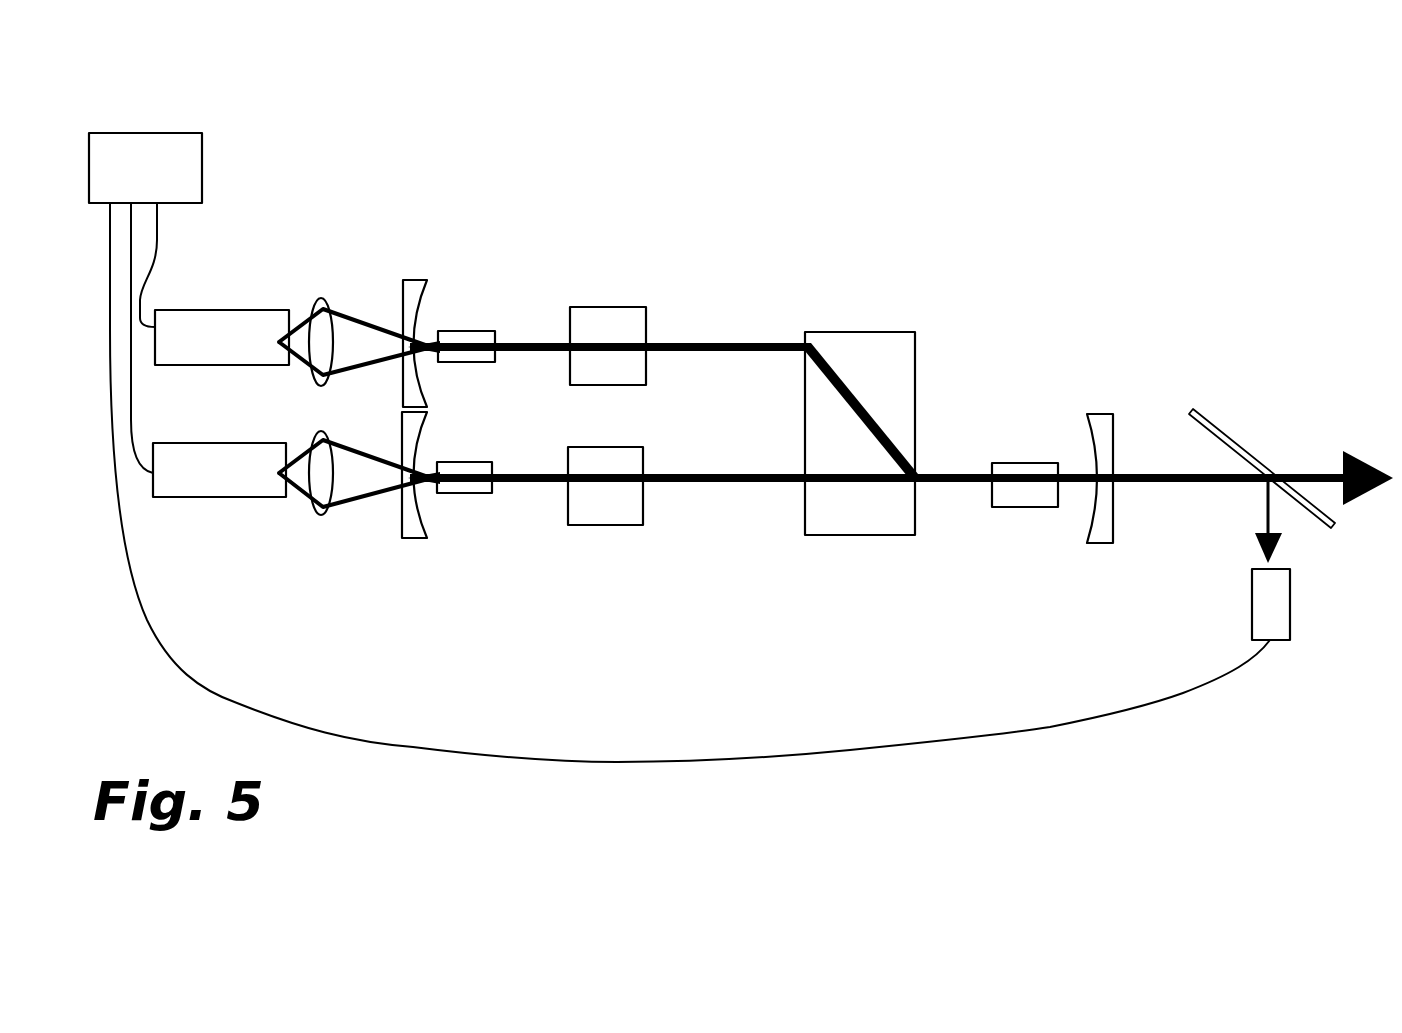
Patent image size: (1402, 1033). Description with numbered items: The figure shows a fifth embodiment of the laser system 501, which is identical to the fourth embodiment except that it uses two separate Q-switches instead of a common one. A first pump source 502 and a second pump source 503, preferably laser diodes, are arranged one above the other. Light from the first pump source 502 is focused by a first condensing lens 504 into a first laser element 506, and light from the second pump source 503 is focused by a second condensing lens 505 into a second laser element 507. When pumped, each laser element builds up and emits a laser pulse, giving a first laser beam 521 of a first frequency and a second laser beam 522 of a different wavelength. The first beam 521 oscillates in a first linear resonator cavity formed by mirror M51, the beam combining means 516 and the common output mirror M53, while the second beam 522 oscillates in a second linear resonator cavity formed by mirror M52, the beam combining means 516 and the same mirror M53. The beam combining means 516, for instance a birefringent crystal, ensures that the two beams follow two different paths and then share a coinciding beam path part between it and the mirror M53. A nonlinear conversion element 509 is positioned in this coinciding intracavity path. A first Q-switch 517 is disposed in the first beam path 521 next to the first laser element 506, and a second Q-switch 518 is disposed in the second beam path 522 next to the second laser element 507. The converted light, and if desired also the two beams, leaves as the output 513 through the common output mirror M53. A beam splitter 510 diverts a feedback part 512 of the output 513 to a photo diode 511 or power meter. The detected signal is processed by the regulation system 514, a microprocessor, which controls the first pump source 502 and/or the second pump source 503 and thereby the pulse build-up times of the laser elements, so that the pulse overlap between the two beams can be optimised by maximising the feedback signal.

The laser system 501 is at (870, 156).
The first pump source 502 is at (236, 324).
The second pump source 503 is at (213, 487).
The first condensing lens 504 is at (335, 308).
The second condensing lens 505 is at (320, 518).
The first laser element 506 is at (475, 332).
The second laser element 507 is at (480, 488).
The nonlinear conversion element 509 is at (1007, 500).
The beam splitter 510 is at (1195, 410).
The photo diode 511 is at (1278, 615).
The feedback part 512 is at (1273, 512).
The output 513 is at (1292, 470).
The regulation system 514 is at (173, 140).
The beam combining means 516 is at (862, 522).
The first Q-switch 517 is at (637, 365).
The second Q-switch 518 is at (637, 505).
The first laser beam 521 is at (680, 344).
The second laser beam 522 is at (680, 475).
The first mirror M51 is at (413, 285).
The second mirror M52 is at (410, 528).
The common output mirror M53 is at (1140, 568).